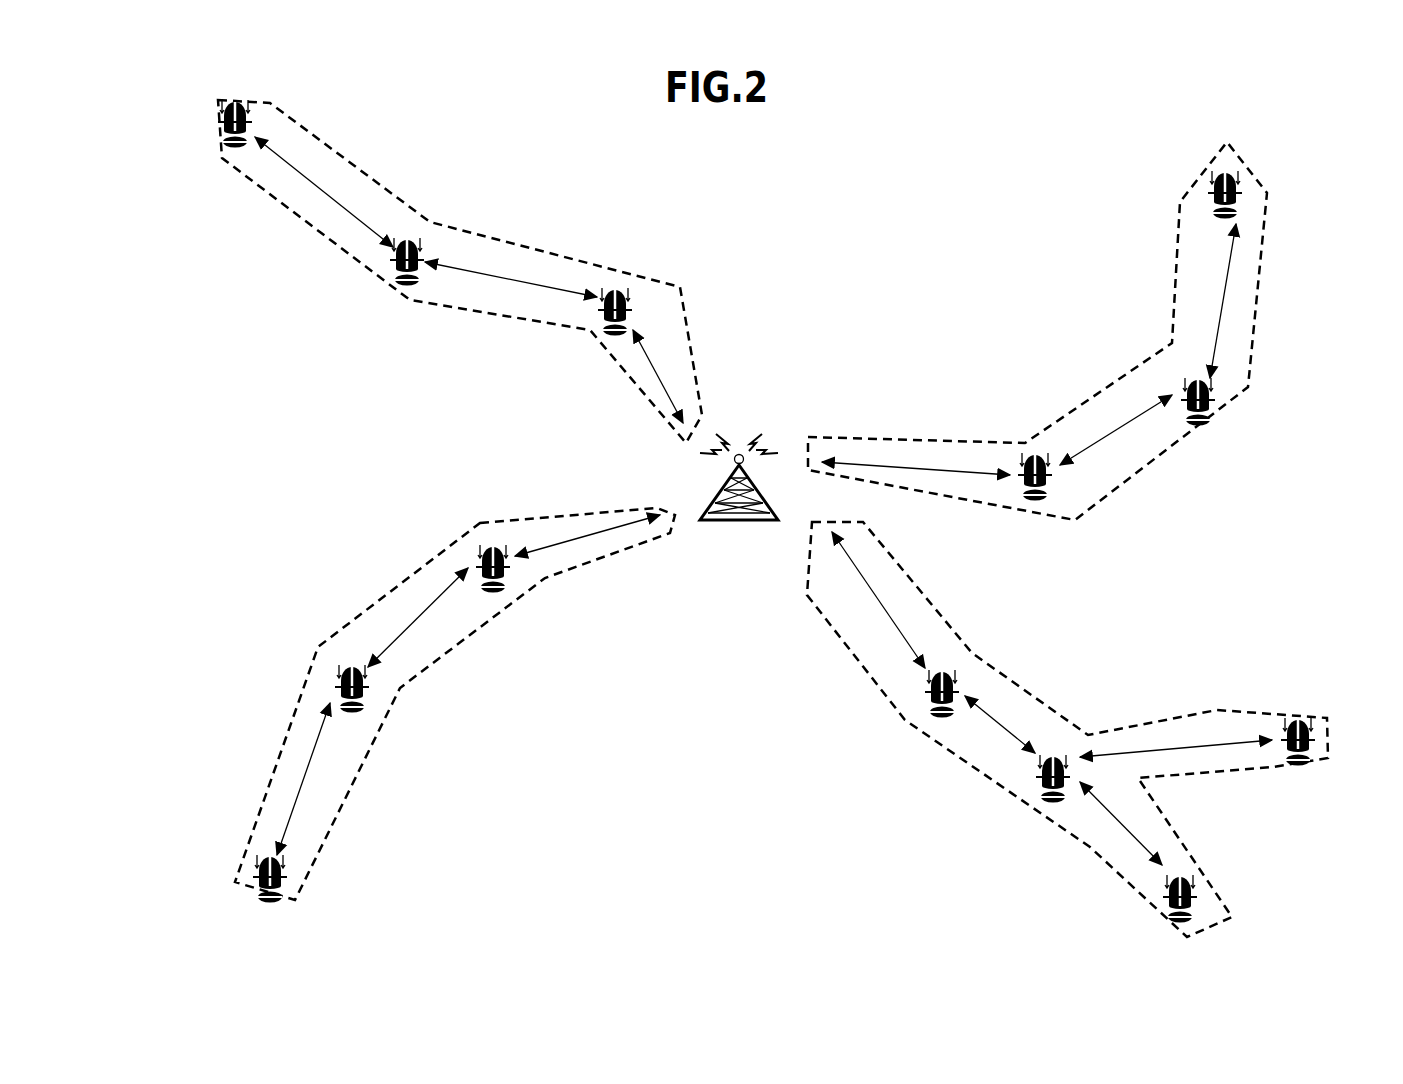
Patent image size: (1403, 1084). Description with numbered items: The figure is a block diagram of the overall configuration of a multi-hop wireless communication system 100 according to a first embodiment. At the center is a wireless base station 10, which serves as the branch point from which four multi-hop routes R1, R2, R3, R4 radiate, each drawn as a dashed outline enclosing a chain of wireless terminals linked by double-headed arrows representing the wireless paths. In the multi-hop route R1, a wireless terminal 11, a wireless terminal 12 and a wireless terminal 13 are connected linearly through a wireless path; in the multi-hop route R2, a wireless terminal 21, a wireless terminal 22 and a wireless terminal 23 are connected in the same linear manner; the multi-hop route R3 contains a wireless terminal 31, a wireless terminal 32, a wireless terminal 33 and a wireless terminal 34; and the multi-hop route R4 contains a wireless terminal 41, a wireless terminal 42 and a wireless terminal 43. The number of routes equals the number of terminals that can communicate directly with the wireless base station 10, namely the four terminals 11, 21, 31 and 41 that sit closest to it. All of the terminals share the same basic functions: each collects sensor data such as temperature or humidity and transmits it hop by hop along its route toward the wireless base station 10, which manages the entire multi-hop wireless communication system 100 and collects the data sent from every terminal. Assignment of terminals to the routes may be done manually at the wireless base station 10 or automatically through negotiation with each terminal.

The multi-hop wireless communication system 100 is at (806, 244).
The wireless base station 10 is at (739, 522).
The wireless terminal 11 is at (606, 336).
The wireless terminal 12 is at (398, 283).
The wireless terminal 13 is at (228, 146).
The wireless terminal 21 is at (1035, 503).
The wireless terminal 22 is at (1205, 425).
The wireless terminal 23 is at (1216, 214).
The wireless terminal 31 is at (930, 715).
The wireless terminal 32 is at (1045, 798).
The wireless terminal 33 is at (1172, 918).
The wireless terminal 34 is at (1298, 766).
The wireless terminal 41 is at (500, 590).
The wireless terminal 42 is at (352, 712).
The wireless terminal 43 is at (270, 903).
The multi-hop route R1 is at (462, 228).
The multi-hop route R2 is at (1100, 375).
The multi-hop route R3 is at (978, 652).
The multi-hop route R4 is at (400, 688).